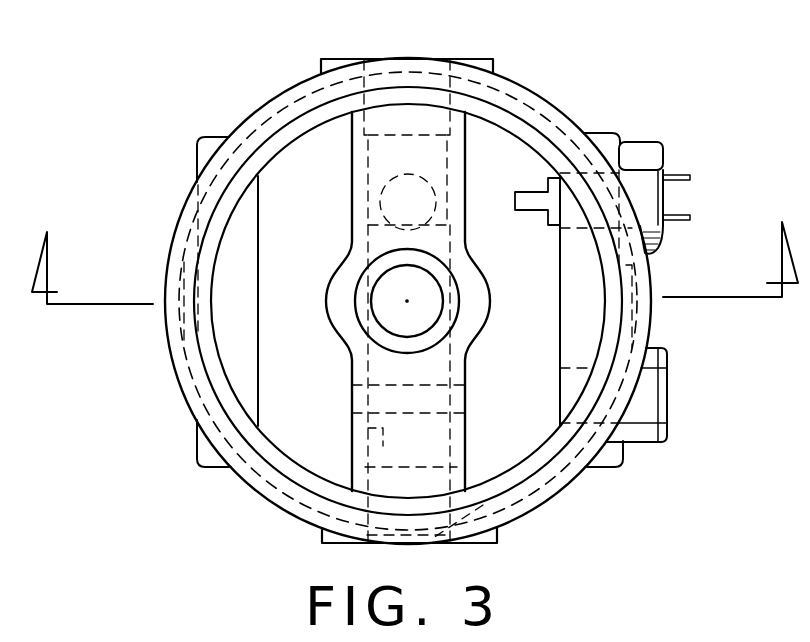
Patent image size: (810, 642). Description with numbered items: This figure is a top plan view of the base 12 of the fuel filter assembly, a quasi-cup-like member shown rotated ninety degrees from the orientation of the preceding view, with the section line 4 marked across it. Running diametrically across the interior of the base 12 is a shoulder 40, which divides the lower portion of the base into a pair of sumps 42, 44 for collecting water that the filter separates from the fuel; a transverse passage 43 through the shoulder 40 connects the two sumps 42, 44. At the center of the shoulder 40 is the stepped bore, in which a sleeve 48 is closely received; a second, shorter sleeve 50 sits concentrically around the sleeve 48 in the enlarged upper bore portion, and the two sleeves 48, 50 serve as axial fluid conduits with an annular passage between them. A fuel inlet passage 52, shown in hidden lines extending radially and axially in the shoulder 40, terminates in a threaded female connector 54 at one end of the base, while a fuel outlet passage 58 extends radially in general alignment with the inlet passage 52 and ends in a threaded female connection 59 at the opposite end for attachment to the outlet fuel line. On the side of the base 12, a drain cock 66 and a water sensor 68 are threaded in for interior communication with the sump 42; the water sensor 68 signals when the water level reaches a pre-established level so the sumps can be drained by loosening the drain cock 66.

The section line 4- 4 is at (415, 245).
The base 12 is at (560, 493).
The interior diametrical shoulder 40 is at (355, 372).
The sump 42 is at (290, 182).
The transverse passage 43 is at (470, 393).
The sump 44 is at (508, 160).
The sleeve 48 is at (445, 272).
The second sleeve 50 is at (425, 341).
The fuel inlet passage 52 is at (383, 183).
The threaded female connector 54 is at (450, 88).
The fuel outlet passage 58 is at (352, 465).
The threaded female connection 59 is at (483, 505).
The drain cock 66 is at (667, 403).
The water sensor 68 is at (640, 152).